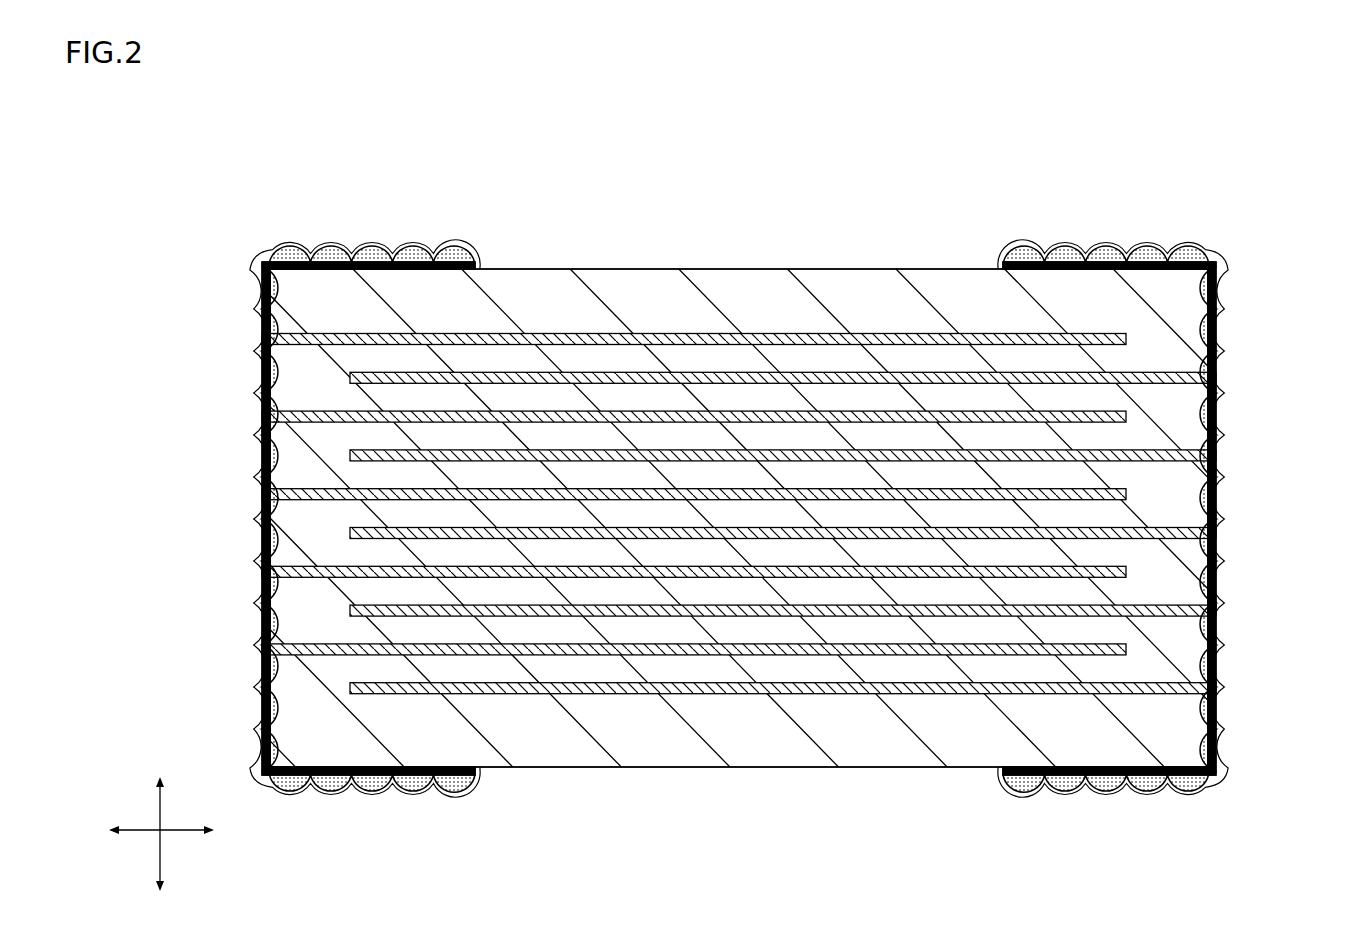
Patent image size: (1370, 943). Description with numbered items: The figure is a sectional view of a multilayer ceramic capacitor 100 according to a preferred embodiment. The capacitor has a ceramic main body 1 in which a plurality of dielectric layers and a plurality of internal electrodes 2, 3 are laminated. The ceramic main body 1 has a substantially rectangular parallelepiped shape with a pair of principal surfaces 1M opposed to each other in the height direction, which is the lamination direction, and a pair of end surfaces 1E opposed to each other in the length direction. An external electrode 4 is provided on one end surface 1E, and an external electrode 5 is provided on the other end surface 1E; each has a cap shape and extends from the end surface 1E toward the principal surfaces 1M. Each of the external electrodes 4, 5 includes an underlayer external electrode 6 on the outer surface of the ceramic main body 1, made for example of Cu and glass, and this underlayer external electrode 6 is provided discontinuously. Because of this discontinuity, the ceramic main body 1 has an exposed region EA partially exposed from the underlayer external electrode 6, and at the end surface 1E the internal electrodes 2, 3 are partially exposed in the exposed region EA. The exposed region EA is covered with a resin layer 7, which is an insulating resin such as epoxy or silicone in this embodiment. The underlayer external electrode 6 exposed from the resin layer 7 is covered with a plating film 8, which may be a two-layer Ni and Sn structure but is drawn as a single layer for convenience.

The multilayer ceramic capacitor 100 is at (206, 118).
The ceramic main body 1 is at (586, 305).
The principal surfaces 1M is at (712, 232).
The end surfaces 1E is at (206, 517).
The internal electrode 2 is at (815, 338).
The internal electrode 3 is at (888, 376).
The external electrode 4 is at (349, 207).
The external electrode 5 is at (1095, 212).
The underlayer external electrode 6 is at (247, 362).
The resin layer 7 is at (248, 396).
The plating film 8 is at (249, 415).
The exposed region EA is at (240, 387).